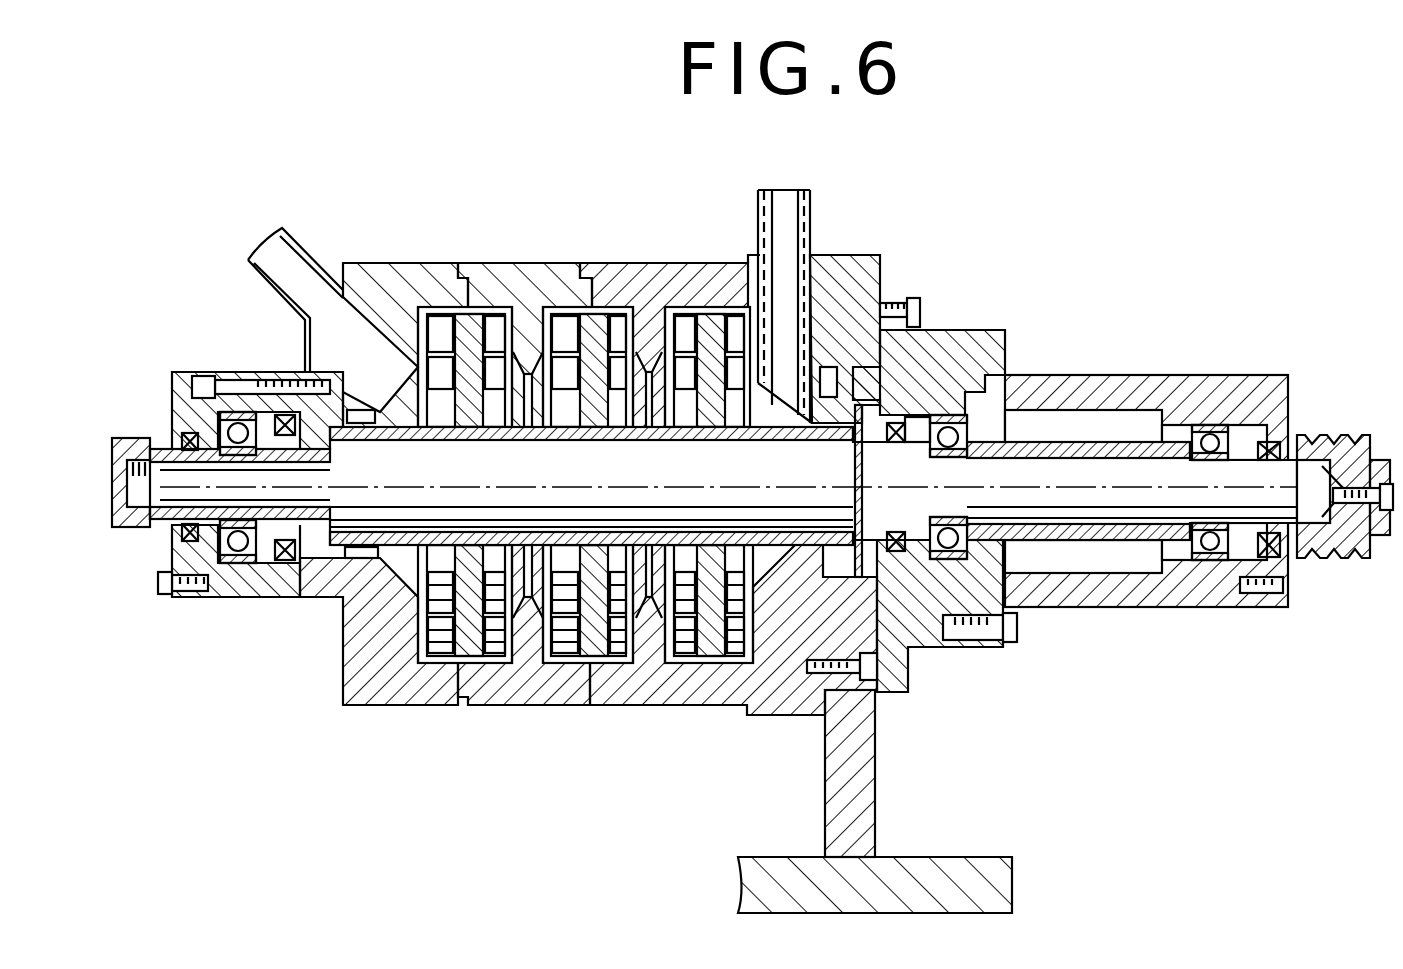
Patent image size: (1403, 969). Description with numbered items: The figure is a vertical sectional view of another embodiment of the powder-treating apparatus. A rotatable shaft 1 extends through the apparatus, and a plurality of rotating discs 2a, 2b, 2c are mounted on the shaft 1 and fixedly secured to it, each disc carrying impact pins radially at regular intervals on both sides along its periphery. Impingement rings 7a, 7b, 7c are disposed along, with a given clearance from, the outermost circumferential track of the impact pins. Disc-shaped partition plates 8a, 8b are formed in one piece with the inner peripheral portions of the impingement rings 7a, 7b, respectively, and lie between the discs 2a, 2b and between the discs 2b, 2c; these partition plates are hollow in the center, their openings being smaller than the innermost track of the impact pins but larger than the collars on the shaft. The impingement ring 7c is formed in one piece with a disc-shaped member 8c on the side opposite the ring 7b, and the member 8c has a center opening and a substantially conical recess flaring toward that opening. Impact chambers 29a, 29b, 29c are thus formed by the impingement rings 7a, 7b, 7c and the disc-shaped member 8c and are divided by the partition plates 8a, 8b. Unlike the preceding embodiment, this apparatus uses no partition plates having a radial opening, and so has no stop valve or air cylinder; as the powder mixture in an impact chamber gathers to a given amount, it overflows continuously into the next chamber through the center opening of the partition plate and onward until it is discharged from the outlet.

The rotatable shaft 1 is at (1085, 505).
The rotating disc 2a is at (713, 325).
The rotating disc 2b is at (586, 320).
The rotating disc 2c is at (462, 320).
The impingement ring 7a is at (673, 275).
The impingement ring 7b is at (522, 280).
The impingement ring 7c is at (410, 280).
The partition plate 8a is at (652, 650).
The partition plate 8b is at (522, 653).
The disc-shaped member 8c is at (345, 652).
The impact chamber 29a is at (735, 305).
The impact chamber 29b is at (616, 300).
The impact chamber 29c is at (500, 300).